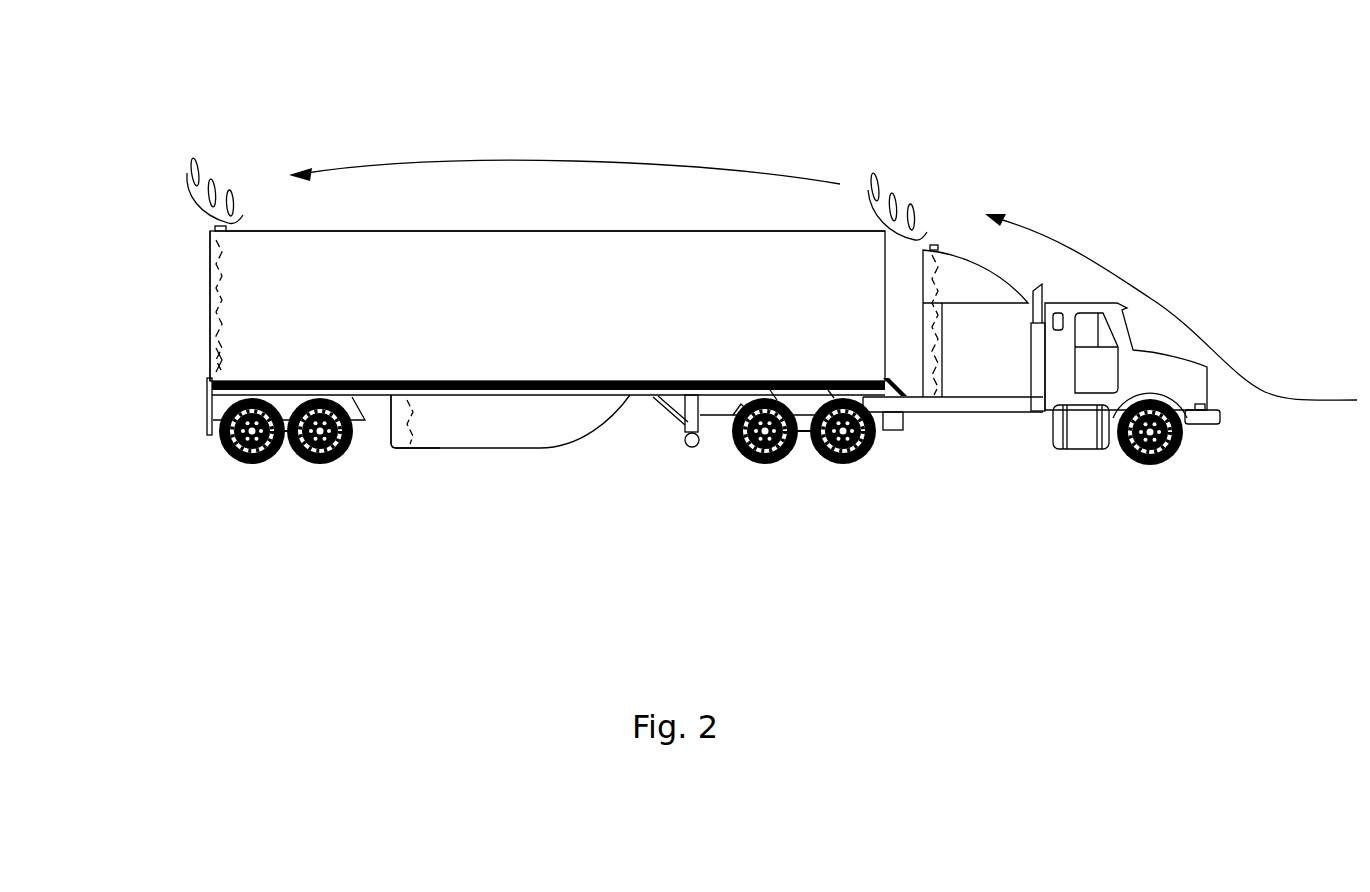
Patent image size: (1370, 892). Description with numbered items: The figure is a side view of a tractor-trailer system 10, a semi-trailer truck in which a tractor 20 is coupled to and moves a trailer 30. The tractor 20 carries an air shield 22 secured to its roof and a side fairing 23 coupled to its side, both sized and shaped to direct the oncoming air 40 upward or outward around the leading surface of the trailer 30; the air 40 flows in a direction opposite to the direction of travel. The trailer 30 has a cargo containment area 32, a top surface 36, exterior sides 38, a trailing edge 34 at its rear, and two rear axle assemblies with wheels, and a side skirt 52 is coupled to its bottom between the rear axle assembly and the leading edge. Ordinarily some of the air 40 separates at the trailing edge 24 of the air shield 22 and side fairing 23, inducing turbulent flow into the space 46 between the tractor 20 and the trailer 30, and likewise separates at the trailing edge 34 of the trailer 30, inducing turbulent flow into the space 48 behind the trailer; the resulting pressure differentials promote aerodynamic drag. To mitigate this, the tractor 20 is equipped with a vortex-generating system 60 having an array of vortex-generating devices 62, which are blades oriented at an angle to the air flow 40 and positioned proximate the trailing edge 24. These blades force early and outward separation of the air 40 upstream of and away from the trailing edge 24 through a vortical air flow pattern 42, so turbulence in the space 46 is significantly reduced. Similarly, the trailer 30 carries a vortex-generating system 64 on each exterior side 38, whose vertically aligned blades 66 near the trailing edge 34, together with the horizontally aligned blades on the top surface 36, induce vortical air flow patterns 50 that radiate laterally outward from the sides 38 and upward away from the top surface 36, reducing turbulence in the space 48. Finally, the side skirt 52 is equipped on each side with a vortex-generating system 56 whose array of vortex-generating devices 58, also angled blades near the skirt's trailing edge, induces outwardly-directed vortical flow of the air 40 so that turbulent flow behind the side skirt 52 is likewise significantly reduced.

The tractor-trailer system 10 is at (944, 112).
The tractor 20 is at (1085, 290).
The air shield 22 is at (802, 430).
The side fairing 23 is at (933, 398).
The trailing edge of the air shield and side fairing 24 is at (915, 380).
The trailer 30 is at (705, 225).
The cargo containment area 32 is at (362, 250).
The trailing edge of the trailer 34 is at (210, 300).
The top surface of the trailer 36 is at (560, 230).
The exterior side of the trailer 38 is at (557, 296).
The air flow 40 is at (1170, 305).
The vortical air flow pattern 42 is at (912, 177).
The space behind the tractor 46 is at (899, 368).
The space behind the trailer 48 is at (183, 380).
The vortical air flow pattern 50 is at (206, 132).
The side skirt 52 is at (562, 418).
The vortex-generating system 56 is at (442, 432).
The vortex-generating devices 58 is at (410, 442).
The vortex-generating system 60 is at (951, 333).
The vortex-generating devices 62 is at (930, 373).
The vortex-generating system 64 is at (242, 300).
The vortex-generating devices 66 is at (220, 352).